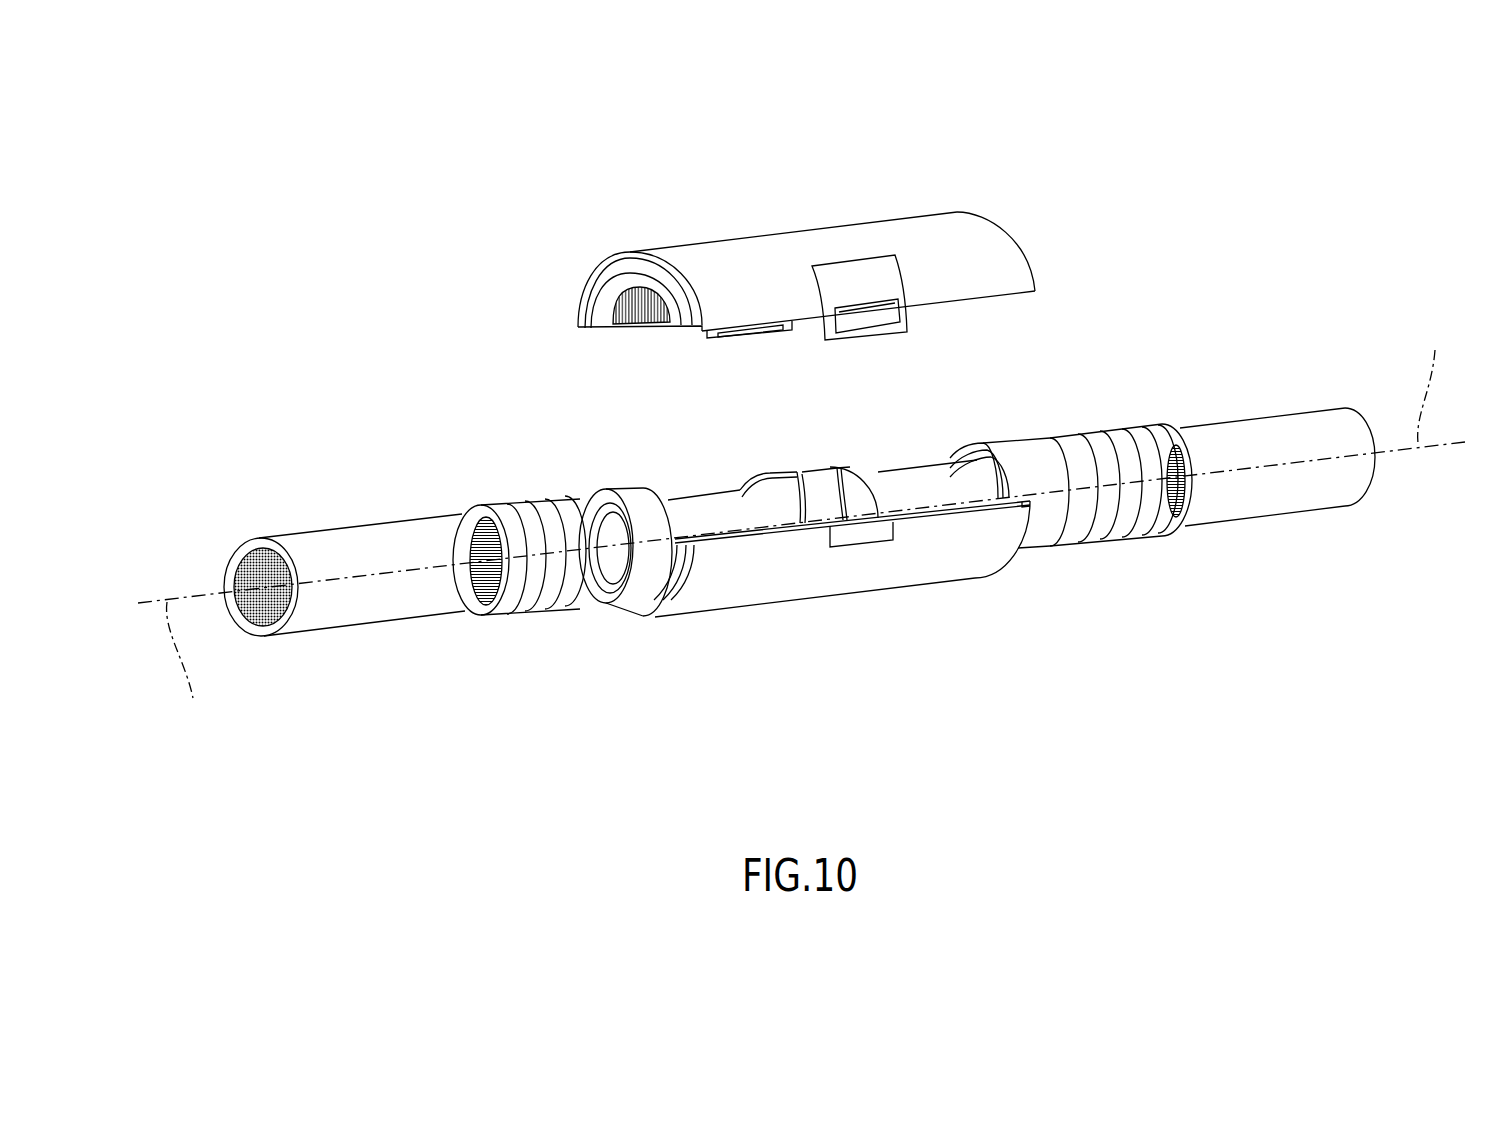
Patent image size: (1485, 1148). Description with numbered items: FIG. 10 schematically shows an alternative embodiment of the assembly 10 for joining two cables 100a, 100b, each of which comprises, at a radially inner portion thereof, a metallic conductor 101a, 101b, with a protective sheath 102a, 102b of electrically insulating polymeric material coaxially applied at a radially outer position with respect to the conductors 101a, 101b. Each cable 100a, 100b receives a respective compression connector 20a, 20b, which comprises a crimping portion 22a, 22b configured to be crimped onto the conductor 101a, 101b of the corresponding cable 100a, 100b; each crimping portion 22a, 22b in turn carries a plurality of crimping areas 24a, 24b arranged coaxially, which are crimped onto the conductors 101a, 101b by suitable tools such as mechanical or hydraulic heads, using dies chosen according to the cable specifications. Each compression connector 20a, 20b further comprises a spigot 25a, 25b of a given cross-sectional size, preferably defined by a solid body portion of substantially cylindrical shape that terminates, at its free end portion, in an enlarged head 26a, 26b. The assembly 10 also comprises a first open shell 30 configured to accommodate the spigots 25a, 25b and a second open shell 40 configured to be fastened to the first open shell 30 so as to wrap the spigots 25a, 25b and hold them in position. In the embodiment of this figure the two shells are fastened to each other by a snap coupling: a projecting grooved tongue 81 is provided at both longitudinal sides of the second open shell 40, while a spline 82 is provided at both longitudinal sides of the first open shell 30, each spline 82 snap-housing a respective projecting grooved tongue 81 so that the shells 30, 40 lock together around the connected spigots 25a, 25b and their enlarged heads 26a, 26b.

The assembly 10 is at (801, 427).
The second open shell 40 is at (806, 305).
The projecting grooved tongue 81 is at (857, 339).
The cable 100b is at (344, 586).
The protective sheath 102b is at (336, 607).
The compression connector 20b is at (544, 556).
The crimping portion 22b is at (498, 577).
The metallic conductor 101b is at (498, 590).
The crimping area 24b is at (600, 557).
The spigot 25b is at (664, 480).
The first open shell 30 is at (842, 592).
The spline 82 is at (868, 535).
The enlarged head 26b is at (770, 498).
The enlarged head 26a is at (877, 490).
The compression connector 20a is at (1088, 483).
The spigot 25a is at (934, 447).
The crimping area 24a is at (1143, 497).
The crimping portion 22a is at (1174, 478).
The metallic conductor 101a is at (1183, 490).
The cable 100a is at (1281, 464).
The protective sheath 102a is at (1322, 483).